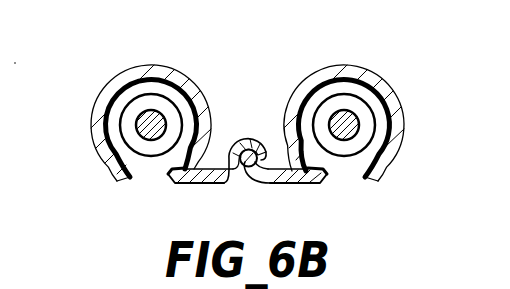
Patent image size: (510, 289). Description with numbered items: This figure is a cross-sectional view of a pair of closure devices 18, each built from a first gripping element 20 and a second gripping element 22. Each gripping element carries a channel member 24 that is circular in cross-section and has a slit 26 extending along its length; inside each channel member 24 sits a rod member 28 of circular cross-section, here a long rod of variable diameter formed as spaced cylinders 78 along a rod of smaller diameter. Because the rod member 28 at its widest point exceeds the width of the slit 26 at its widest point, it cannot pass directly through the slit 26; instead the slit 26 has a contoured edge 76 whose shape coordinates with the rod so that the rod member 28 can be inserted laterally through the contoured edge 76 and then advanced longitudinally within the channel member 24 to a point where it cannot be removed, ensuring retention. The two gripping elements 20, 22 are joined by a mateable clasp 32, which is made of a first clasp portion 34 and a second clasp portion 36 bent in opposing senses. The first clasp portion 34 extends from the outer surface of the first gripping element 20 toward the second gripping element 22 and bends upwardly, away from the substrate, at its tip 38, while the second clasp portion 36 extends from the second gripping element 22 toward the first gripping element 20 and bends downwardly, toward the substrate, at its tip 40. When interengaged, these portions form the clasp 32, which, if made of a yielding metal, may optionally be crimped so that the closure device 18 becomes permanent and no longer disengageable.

The closure device 18 is at (272, 202).
The first gripping element 20 is at (405, 101).
The second gripping element 22 is at (96, 97).
The channel member 24 is at (100, 133).
The slit 26 is at (153, 178).
The rod member 28 is at (153, 118).
The mateable clasp 32 is at (238, 186).
The first clasp portion 34 is at (278, 170).
The second clasp portion 36 is at (218, 169).
The tip of first clasp portion 38 is at (243, 137).
The tip of second clasp portion 40 is at (256, 137).
The contoured edge 76 is at (110, 167).
The spaced cylinders 78 is at (132, 93).